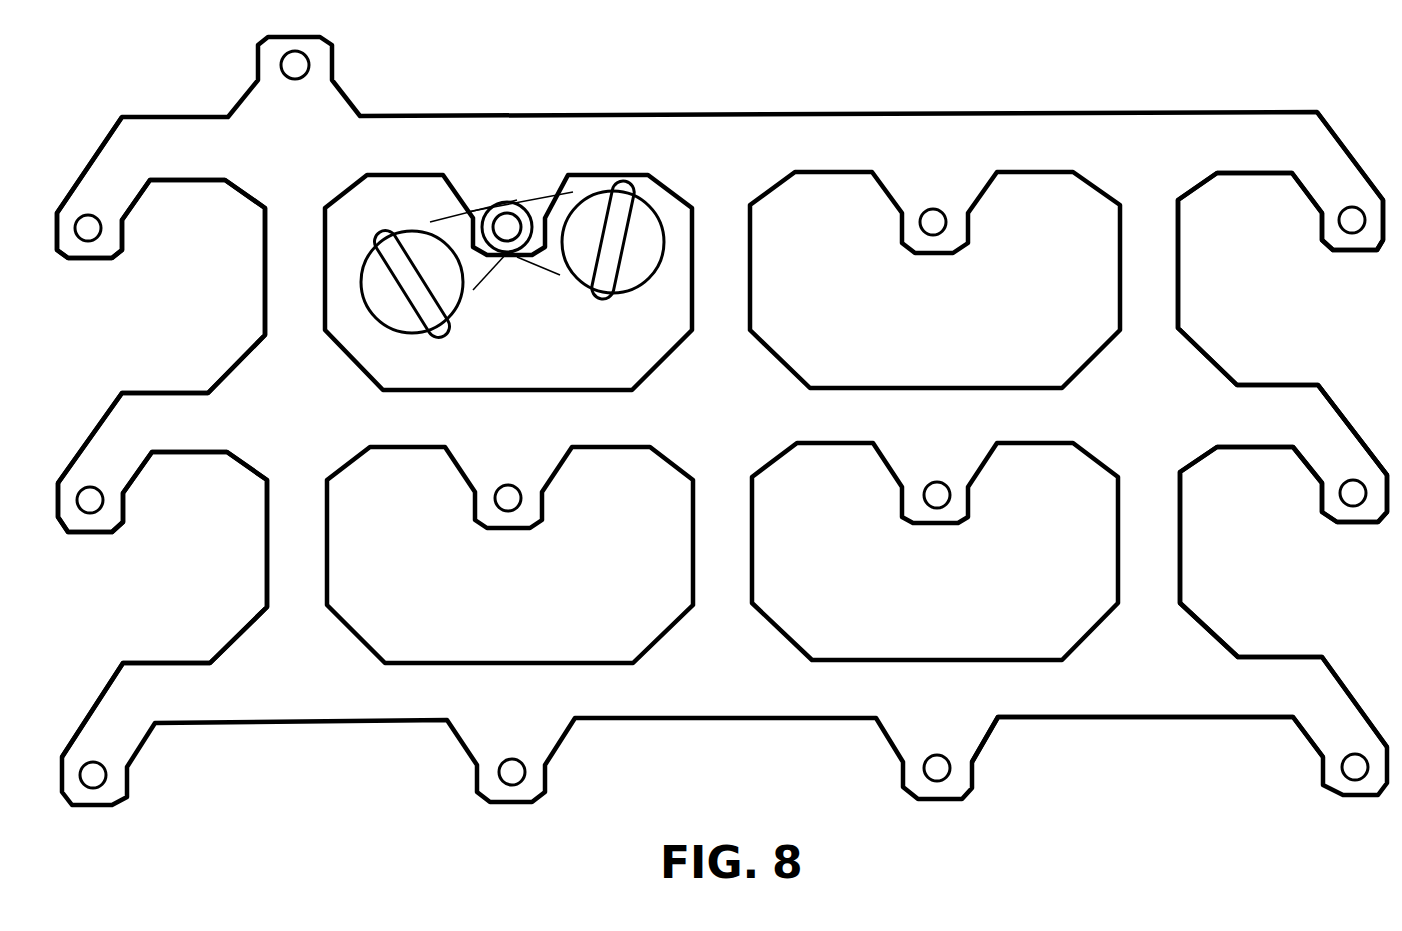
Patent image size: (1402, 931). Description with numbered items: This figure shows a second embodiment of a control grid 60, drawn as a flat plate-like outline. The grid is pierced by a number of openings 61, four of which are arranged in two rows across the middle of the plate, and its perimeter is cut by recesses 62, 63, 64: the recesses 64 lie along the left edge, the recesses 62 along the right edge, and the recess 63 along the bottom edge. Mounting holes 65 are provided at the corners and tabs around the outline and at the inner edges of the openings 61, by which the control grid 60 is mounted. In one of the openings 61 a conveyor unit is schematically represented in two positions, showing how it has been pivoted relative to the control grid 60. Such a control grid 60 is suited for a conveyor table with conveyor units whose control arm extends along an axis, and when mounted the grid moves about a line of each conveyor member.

The control grid 60 is at (723, 716).
The openings 61 is at (485, 360).
The recesses 62 is at (1243, 315).
The recesses 63 is at (1130, 799).
The recesses 64 is at (200, 365).
The mounting holes 65 is at (88, 236).